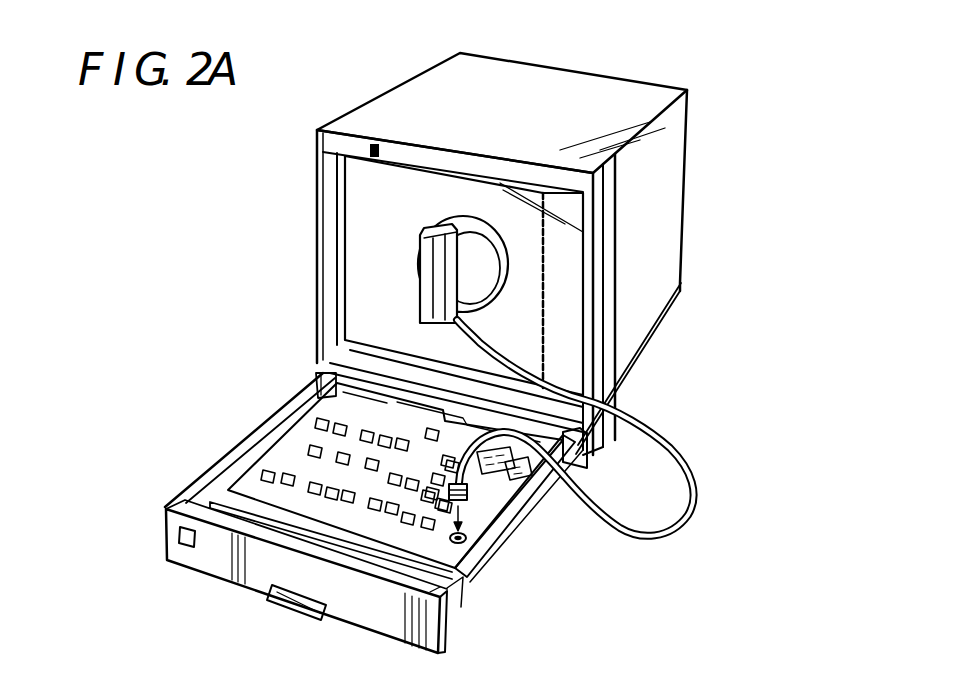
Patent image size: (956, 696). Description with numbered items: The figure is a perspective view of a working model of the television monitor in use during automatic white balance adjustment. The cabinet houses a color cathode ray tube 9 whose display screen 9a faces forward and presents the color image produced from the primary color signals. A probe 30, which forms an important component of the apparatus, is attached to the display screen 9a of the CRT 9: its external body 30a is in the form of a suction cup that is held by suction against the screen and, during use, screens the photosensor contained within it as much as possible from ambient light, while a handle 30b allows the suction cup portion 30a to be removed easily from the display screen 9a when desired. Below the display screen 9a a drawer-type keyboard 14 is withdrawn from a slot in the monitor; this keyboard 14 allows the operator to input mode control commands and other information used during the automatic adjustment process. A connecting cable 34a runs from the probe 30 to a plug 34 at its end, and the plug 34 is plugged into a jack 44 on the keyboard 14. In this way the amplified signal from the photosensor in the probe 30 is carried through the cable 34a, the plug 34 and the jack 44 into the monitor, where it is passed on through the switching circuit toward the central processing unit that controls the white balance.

The color cathode ray tube 9 is at (600, 222).
The display screen 9a is at (565, 241).
The probe 30 is at (493, 294).
The external body 30a is at (505, 285).
The handle 30b is at (420, 307).
The keyboard 14 is at (303, 430).
The plug 34 is at (467, 497).
The connecting cable 34a is at (660, 535).
The jack 44 is at (463, 545).